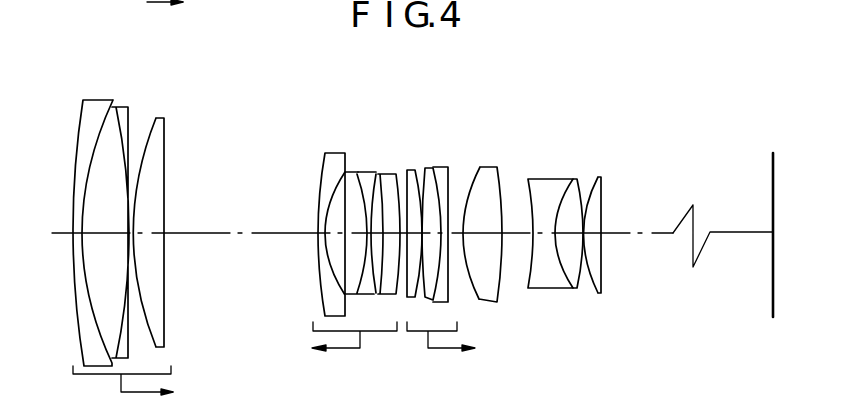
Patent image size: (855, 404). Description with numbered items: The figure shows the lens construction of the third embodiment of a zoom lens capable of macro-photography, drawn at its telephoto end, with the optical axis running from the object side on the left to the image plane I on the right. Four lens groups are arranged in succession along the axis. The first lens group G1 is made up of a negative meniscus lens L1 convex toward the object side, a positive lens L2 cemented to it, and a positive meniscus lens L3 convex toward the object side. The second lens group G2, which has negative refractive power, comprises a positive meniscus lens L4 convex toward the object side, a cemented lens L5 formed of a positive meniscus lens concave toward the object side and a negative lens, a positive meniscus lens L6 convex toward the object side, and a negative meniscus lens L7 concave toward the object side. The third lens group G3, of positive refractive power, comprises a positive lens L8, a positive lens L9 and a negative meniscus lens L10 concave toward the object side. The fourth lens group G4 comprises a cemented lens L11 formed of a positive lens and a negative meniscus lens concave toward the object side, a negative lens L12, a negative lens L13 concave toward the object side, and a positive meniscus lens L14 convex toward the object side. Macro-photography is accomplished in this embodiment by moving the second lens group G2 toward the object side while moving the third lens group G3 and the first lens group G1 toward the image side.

The first lens group G1 is at (195, 50).
The second lens group G2 is at (403, 112).
The third lens group G3 is at (520, 76).
The fourth lens group G4 is at (633, 119).
The negative meniscus lens L1 is at (95, 107).
The positive lens L2 is at (123, 103).
The positive meniscus lens L3 is at (158, 123).
The positive meniscus lens L4 is at (326, 156).
The cemented lens L5 is at (359, 169).
The positive meniscus lens L6 is at (378, 171).
The negative meniscus lens L7 is at (384, 175).
The positive lens L8 is at (413, 169).
The positive lens L9 is at (433, 165).
The negative meniscus lens L10 is at (446, 166).
The cemented lens L11 is at (505, 164).
The negative lens L12 is at (547, 183).
The negative lens L13 is at (575, 181).
The positive meniscus lens L14 is at (599, 178).
The image plane I is at (773, 170).